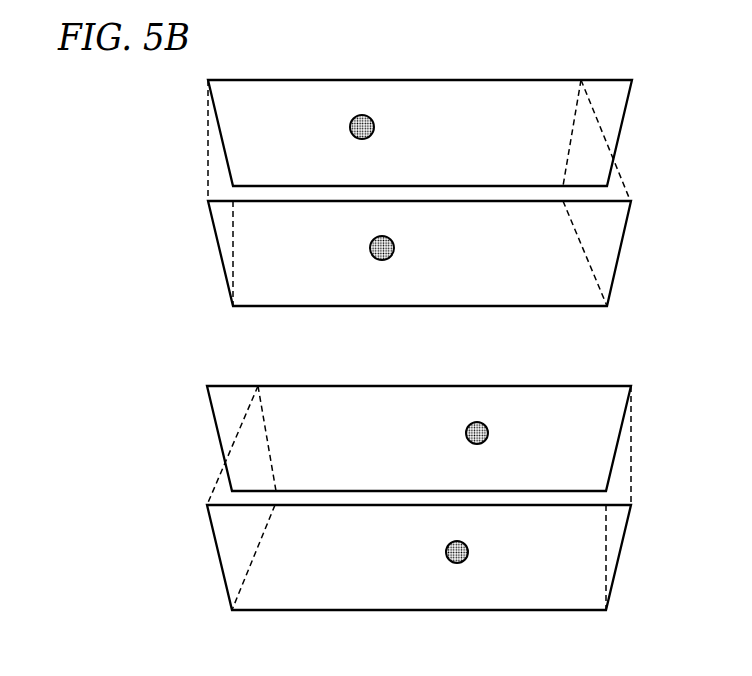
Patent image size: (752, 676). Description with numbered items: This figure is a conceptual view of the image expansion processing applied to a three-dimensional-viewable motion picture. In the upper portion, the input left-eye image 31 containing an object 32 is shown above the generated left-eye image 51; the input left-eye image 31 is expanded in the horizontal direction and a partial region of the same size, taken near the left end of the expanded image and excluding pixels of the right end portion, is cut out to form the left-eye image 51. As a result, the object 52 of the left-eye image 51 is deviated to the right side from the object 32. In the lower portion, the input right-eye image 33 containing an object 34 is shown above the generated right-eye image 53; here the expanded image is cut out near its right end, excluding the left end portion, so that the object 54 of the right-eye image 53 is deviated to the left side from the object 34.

The input left-eye image 31 is at (612, 79).
The object of the left-eye image 32 is at (362, 115).
The input right-eye image 33 is at (612, 385).
The object of the right-eye image 34 is at (477, 422).
The left-eye image 51 is at (622, 248).
The object of the left-eye image 52 is at (382, 260).
The right-eye image 53 is at (622, 553).
The object of the right-eye image 54 is at (457, 563).